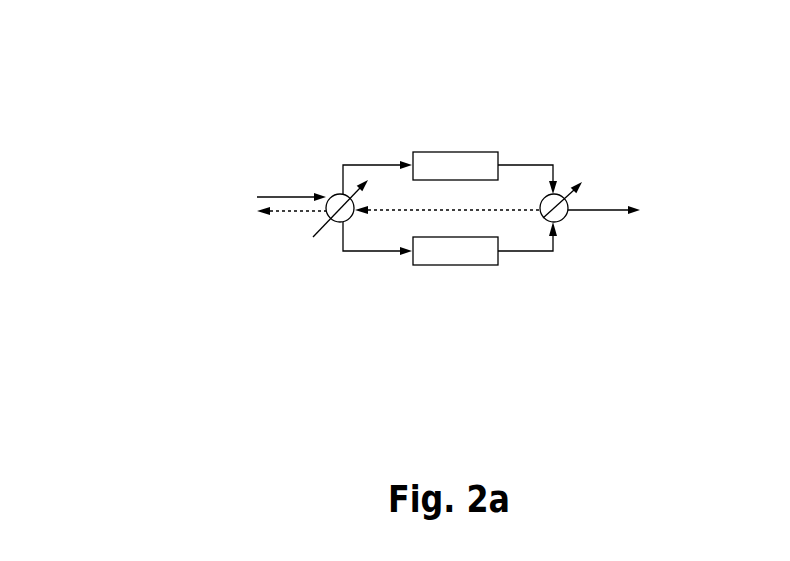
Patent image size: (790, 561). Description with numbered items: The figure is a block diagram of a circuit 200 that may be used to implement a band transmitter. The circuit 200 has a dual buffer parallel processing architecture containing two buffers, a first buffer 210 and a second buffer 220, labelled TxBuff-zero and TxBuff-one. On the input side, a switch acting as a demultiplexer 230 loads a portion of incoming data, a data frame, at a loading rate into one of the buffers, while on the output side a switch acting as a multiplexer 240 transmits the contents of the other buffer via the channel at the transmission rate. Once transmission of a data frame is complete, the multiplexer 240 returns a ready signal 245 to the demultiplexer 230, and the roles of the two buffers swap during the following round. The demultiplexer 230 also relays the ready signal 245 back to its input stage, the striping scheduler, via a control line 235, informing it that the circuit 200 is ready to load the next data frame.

The circuit 200 is at (135, 111).
The first buffer TxBuff-0 210 is at (440, 152).
The second buffer TxBuff-1 220 is at (438, 268).
The switch (demultiplexer) 230 is at (337, 195).
The control line 235 is at (292, 215).
The switch (multiplexer) 240 is at (565, 222).
The ready signal 245 is at (528, 207).